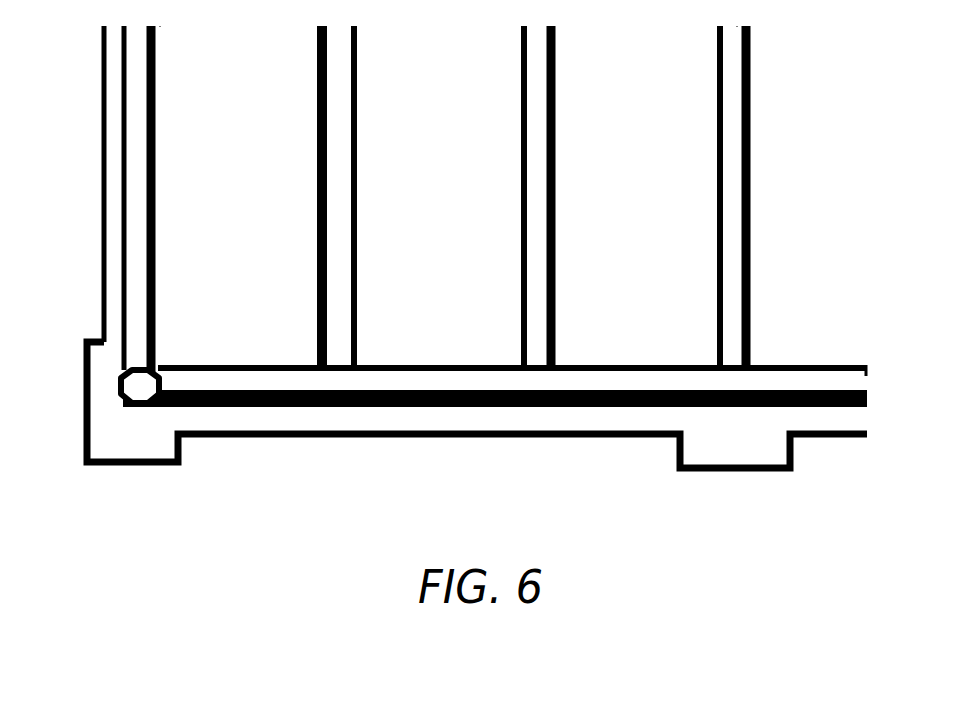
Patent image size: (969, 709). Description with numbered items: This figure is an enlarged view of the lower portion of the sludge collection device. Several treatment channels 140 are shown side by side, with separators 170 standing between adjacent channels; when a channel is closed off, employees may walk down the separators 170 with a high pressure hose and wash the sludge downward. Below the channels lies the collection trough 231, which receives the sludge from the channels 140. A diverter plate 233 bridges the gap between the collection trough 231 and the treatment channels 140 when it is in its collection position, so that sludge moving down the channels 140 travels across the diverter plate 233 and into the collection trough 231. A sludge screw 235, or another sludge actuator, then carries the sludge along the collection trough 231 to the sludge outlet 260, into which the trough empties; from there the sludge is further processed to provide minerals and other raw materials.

The treatment channel 140 is at (448, 132).
The separator 170 is at (730, 98).
The collection trough 231 is at (403, 393).
The diverter plate 233 is at (867, 364).
The sludge screw 235 is at (478, 378).
The sludge outlet 260 is at (464, 465).